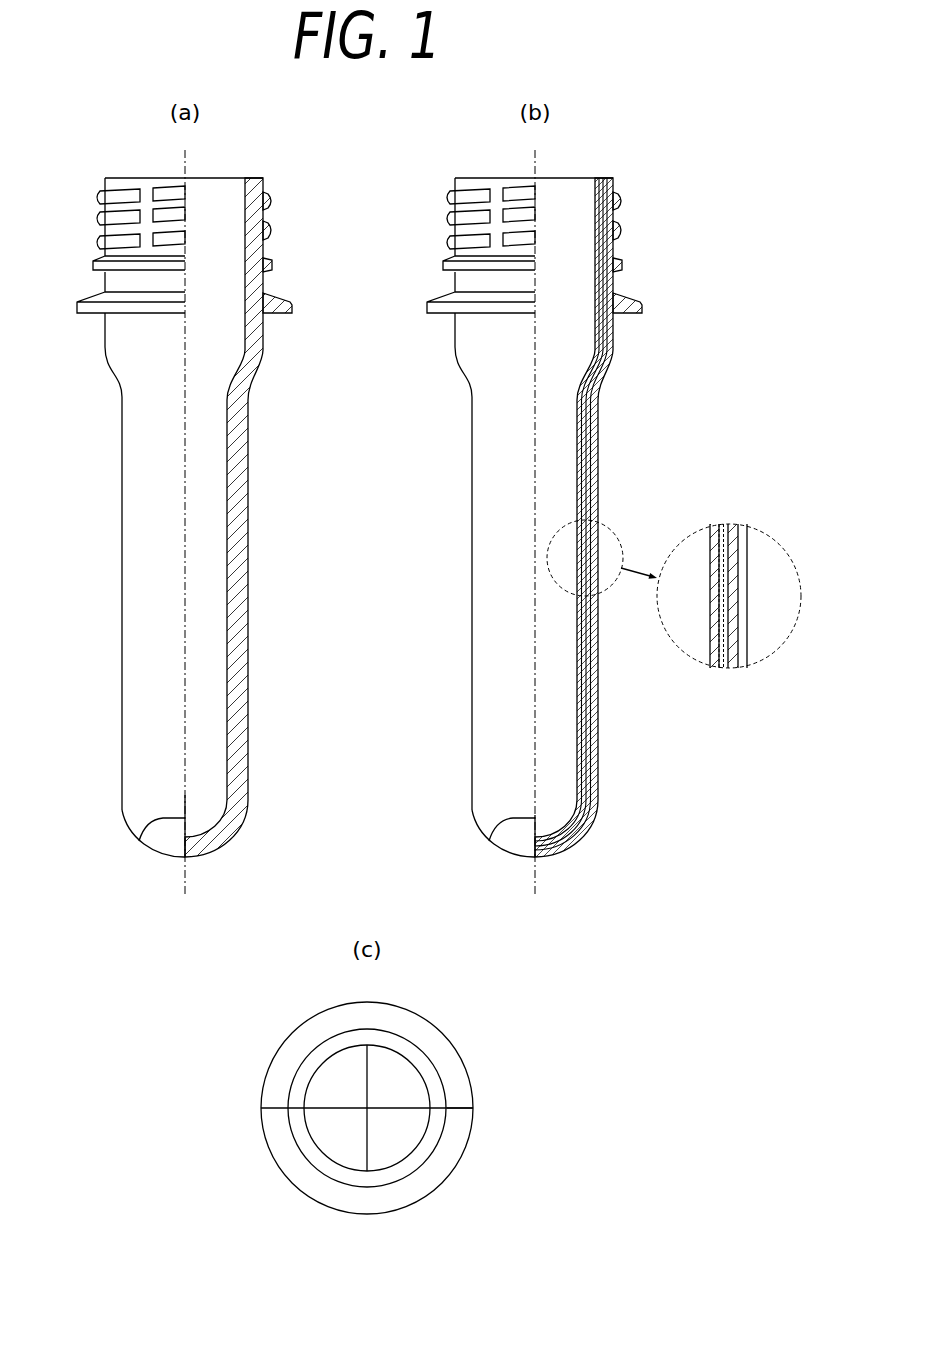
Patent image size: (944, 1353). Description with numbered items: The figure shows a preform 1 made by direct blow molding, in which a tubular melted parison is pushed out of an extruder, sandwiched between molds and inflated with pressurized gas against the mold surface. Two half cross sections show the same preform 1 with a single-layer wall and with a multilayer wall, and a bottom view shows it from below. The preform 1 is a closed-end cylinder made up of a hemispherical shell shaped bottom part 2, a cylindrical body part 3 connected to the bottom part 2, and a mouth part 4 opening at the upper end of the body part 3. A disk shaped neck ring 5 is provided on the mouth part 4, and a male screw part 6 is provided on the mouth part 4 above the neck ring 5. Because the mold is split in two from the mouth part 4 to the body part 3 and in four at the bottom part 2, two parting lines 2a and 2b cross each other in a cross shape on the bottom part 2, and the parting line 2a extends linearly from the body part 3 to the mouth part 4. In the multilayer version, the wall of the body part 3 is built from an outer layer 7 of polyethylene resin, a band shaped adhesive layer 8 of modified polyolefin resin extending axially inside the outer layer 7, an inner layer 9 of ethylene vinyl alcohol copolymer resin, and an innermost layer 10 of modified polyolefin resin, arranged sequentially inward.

The preform 1 is at (264, 523).
The bottom part 2 is at (217, 847).
The parting line 2a is at (457, 1105).
The parting line 2b is at (140, 840).
The body part 3 is at (250, 608).
The mouth part 4 is at (288, 198).
The neck ring 5 is at (292, 300).
The male screw part 6 is at (272, 229).
The outer layer 7 is at (742, 525).
The adhesive layer 8 is at (733, 525).
The inner layer 9 is at (723, 525).
The innermost layer 10 is at (714, 525).